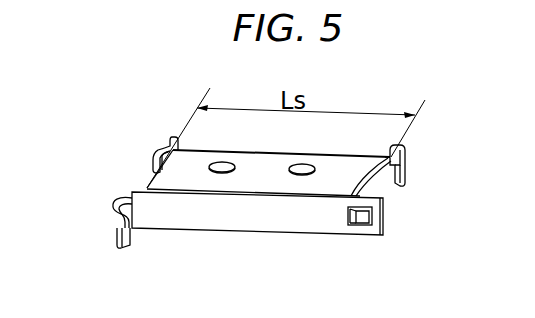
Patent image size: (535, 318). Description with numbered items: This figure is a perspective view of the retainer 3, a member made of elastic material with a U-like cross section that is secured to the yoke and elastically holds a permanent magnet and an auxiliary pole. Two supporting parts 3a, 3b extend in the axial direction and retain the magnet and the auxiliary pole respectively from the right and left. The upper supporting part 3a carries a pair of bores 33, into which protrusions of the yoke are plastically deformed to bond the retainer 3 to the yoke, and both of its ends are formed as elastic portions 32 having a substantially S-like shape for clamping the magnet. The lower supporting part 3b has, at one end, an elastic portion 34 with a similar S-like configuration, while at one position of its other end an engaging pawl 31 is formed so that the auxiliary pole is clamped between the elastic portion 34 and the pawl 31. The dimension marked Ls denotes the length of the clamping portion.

The retainer 3 is at (347, 236).
The supporting part 3a is at (379, 178).
The supporting part 3b is at (270, 191).
The engaging pawl 31 is at (386, 214).
The elastic portions 32 is at (172, 141).
The bores 33 is at (214, 176).
The elastic portion 34 is at (123, 247).